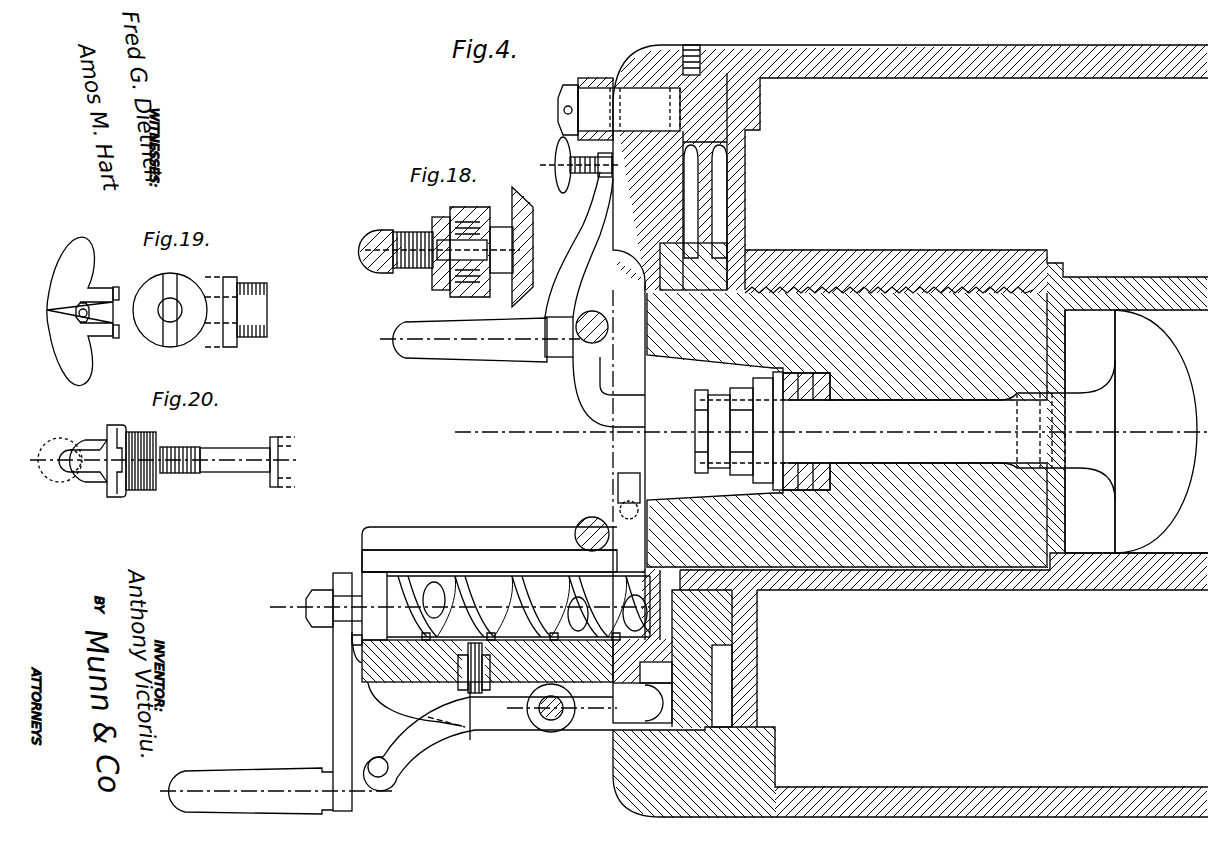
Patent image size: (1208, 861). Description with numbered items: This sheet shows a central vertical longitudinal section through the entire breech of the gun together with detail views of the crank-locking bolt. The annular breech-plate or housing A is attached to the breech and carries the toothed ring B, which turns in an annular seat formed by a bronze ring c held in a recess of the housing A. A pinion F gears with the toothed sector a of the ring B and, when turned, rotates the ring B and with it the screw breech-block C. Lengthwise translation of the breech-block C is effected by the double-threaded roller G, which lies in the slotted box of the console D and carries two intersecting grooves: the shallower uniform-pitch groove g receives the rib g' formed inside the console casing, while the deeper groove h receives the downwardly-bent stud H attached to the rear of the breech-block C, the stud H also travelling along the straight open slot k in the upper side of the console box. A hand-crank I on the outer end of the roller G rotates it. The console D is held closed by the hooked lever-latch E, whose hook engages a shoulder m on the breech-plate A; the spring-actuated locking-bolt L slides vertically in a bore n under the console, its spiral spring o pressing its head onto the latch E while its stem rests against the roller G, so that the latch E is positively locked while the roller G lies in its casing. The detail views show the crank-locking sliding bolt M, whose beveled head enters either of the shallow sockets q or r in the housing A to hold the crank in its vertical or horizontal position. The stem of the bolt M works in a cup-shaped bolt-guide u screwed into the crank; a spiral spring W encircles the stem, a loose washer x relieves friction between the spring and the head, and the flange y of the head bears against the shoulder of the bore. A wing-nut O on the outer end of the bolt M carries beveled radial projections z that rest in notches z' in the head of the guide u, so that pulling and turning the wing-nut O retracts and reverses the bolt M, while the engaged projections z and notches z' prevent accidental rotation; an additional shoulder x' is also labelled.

In FIG. 4, the breech-plate or housing A is at (638, 62).
In FIG. 4, the toothed ring B is at (700, 566).
In FIG. 4, the screw breech-block C is at (847, 430).
In FIG. 4, the bronze ring c is at (705, 248).
In FIG. 4, the toothed sector a is at (705, 201).
In FIG. 4, the pinion F is at (632, 92).
In FIG. 4, the piston rod and piston P is at (870, 419).
In FIG. 18, the piston rod and piston P is at (501, 250).
In FIG. 20, the piston rod and piston P is at (282, 462).
In FIG. 4, the shoulder or catch m is at (560, 160).
In FIG. 4, the spiral spring o is at (557, 176).
In FIG. 4, the socket r is at (519, 299).
In FIG. 4, the stud H is at (590, 516).
In FIG. 4, the bore n is at (505, 686).
In FIG. 4, the console D is at (412, 551).
In FIG. 4, the slot k is at (489, 561).
In FIG. 4, the double-threaded roller G is at (478, 606).
In FIG. 4, the shallower thread or groove g is at (514, 572).
In FIG. 4, the thread or rib g' is at (455, 641).
In FIG. 4, the deeper thread or groove h is at (505, 524).
In FIG. 4, the hand-crank I is at (333, 714).
In FIG. 4, the lever-latch E is at (596, 708).
In FIG. 4, the locking-bolt L is at (457, 719).
In FIG. 18, the wing-nut O is at (380, 240).
In FIG. 19, the wing-nut O is at (80, 311).
In FIG. 20, the wing-nut O is at (72, 451).
In FIG. 18, the bolt-guide u is at (438, 241).
In FIG. 19, the bolt-guide u is at (258, 278).
In FIG. 20, the bolt-guide u is at (141, 449).
In FIG. 18, the spiral spring W is at (473, 243).
In FIG. 18, the flange y is at (514, 247).
In FIG. 20, the flange y is at (275, 488).
In FIG. 18, the socket q is at (540, 240).
In FIG. 18, the sliding bolt M is at (440, 252).
In FIG. 20, the sliding bolt M is at (225, 455).
In FIG. 18, the loose washer x is at (423, 303).
In FIG. 18, the shoulder x' is at (498, 303).
In FIG. 19, the radial projections z is at (122, 314).
In FIG. 20, the radial projections z is at (104, 468).
In FIG. 19, the notches z' is at (173, 314).
In FIG. 20, the notches z' is at (124, 474).